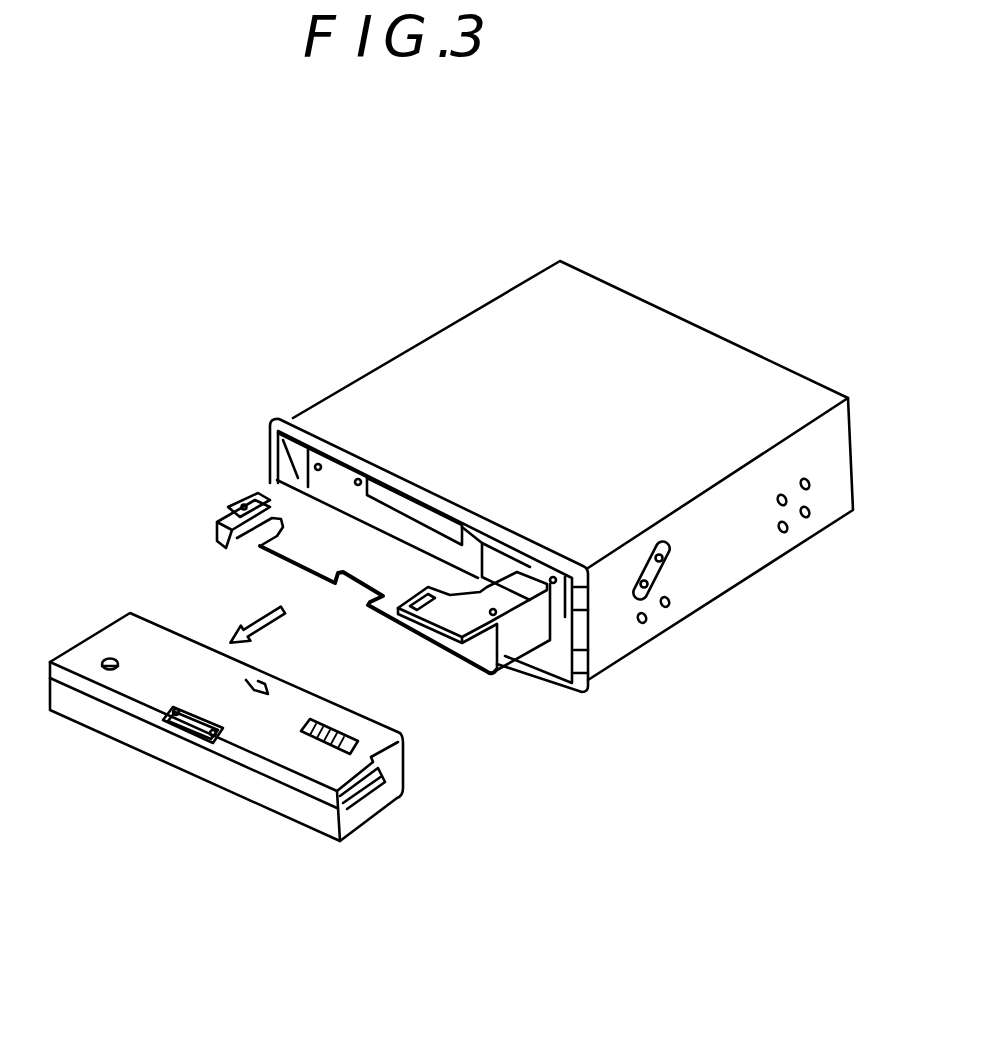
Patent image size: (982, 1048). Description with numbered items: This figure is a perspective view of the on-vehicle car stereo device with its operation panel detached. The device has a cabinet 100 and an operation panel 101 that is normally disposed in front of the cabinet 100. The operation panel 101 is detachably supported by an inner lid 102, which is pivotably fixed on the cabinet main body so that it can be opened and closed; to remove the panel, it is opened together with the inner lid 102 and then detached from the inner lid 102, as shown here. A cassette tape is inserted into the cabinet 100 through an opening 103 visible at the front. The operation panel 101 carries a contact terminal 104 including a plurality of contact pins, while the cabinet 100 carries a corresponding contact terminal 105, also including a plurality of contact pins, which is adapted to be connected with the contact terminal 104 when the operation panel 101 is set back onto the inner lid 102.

The cabinet 100 is at (393, 378).
The operation panel 101 is at (153, 745).
The inner lid 102 is at (276, 500).
The opening 103 is at (413, 507).
The contact terminal 104 is at (347, 733).
The contact terminal 105 is at (462, 617).